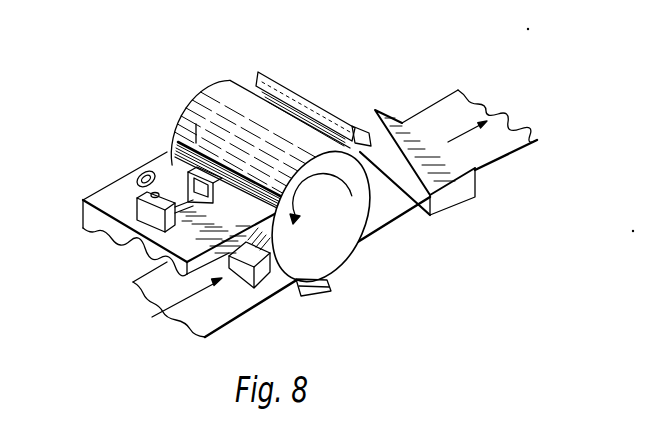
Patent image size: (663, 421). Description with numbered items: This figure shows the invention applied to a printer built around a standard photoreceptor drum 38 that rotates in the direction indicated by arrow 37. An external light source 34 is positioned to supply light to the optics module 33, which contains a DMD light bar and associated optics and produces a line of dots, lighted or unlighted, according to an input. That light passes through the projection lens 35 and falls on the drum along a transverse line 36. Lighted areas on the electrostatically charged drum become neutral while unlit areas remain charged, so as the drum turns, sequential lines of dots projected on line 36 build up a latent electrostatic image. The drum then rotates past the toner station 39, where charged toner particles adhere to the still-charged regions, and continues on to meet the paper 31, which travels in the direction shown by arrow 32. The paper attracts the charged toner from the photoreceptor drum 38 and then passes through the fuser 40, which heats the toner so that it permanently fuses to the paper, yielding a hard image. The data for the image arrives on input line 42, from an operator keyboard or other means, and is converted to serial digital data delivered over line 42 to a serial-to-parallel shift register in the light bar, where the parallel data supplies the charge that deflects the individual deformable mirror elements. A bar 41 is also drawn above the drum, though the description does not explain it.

The paper 31 is at (143, 292).
The direction of paper travel 32 is at (174, 309).
The optics module 33 is at (148, 214).
The external light source 34 is at (135, 178).
The projection lens 35 is at (185, 170).
The transverse line 36 is at (197, 124).
The direction of drum rotation 37 is at (326, 200).
The photoreceptor drum 38 is at (332, 244).
The toner station 39 is at (280, 288).
The fuser 40 is at (475, 197).
The bar 41 is at (275, 72).
The input line 42 is at (137, 214).